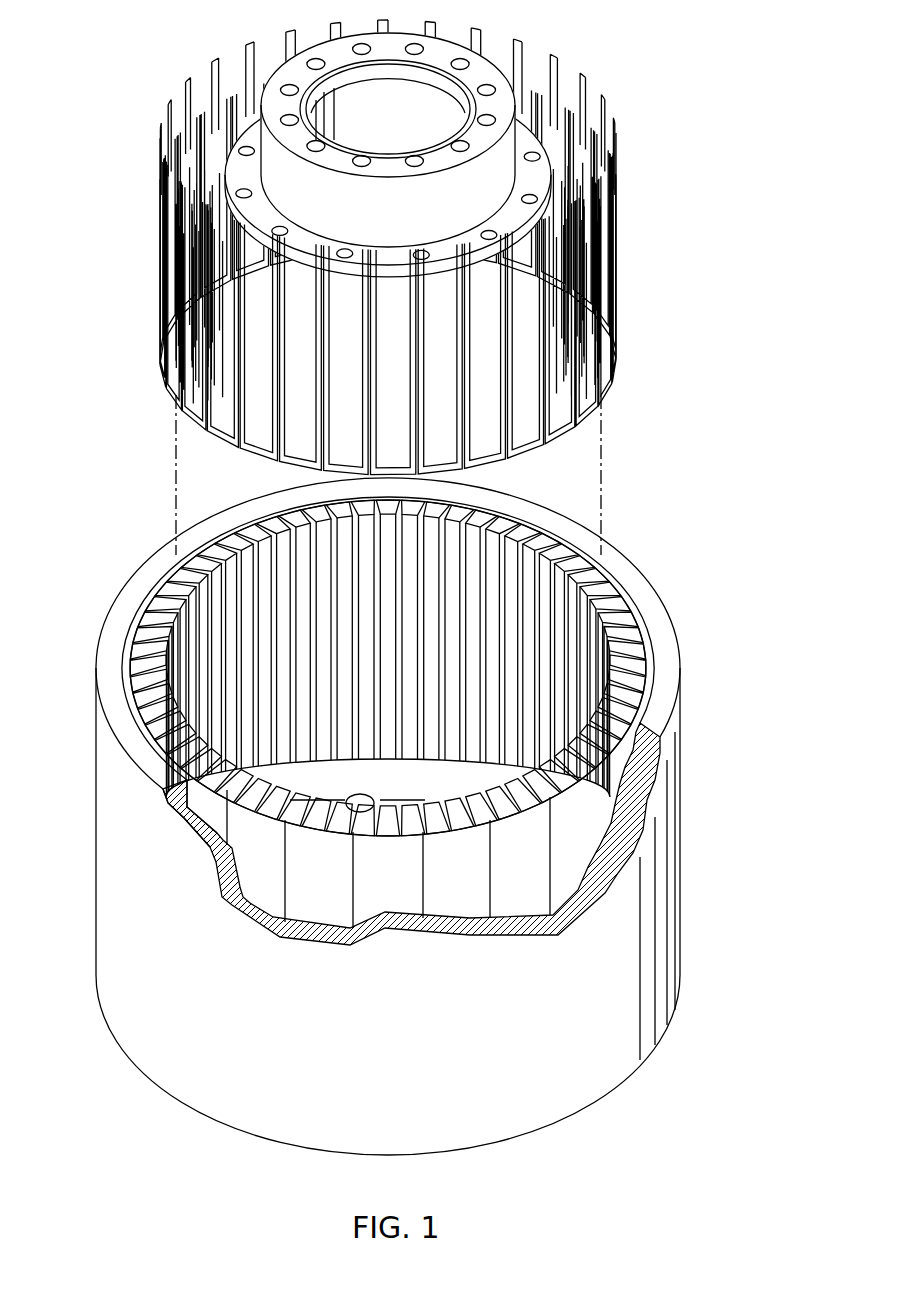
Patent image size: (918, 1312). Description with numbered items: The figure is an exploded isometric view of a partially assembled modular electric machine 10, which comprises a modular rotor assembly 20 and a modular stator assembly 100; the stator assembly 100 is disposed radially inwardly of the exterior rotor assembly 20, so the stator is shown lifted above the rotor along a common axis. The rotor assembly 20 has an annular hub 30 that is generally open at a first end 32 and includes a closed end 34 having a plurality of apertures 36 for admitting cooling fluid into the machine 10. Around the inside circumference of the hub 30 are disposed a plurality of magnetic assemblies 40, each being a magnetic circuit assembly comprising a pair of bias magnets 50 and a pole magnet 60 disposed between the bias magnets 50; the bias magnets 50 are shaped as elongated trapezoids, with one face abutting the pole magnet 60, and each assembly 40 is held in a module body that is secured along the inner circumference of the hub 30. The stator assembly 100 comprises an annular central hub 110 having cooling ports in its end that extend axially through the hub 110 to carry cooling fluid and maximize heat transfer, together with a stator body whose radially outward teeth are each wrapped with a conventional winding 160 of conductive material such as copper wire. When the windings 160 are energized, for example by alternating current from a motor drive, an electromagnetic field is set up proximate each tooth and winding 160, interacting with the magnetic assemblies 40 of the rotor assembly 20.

The modular electric machine 10 is at (688, 482).
The modular rotor assembly 20 is at (650, 761).
The annular hub 30 is at (665, 913).
The first end 32 is at (648, 604).
The closed end 34 is at (560, 777).
The apertures 36 is at (230, 797).
The magnetic assembly 40 is at (268, 895).
The bias magnets 50 is at (354, 828).
The pole magnet 60 is at (320, 832).
The modular stator assembly 100 is at (645, 263).
The annular central hub 110 is at (488, 74).
The winding 160 is at (166, 187).